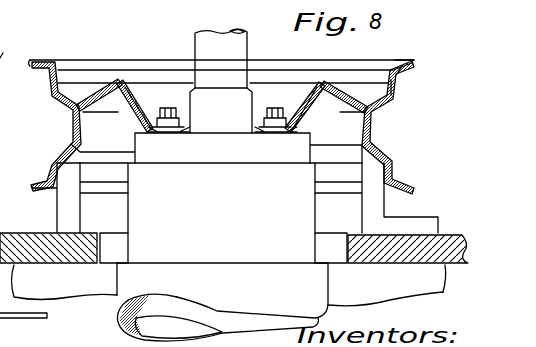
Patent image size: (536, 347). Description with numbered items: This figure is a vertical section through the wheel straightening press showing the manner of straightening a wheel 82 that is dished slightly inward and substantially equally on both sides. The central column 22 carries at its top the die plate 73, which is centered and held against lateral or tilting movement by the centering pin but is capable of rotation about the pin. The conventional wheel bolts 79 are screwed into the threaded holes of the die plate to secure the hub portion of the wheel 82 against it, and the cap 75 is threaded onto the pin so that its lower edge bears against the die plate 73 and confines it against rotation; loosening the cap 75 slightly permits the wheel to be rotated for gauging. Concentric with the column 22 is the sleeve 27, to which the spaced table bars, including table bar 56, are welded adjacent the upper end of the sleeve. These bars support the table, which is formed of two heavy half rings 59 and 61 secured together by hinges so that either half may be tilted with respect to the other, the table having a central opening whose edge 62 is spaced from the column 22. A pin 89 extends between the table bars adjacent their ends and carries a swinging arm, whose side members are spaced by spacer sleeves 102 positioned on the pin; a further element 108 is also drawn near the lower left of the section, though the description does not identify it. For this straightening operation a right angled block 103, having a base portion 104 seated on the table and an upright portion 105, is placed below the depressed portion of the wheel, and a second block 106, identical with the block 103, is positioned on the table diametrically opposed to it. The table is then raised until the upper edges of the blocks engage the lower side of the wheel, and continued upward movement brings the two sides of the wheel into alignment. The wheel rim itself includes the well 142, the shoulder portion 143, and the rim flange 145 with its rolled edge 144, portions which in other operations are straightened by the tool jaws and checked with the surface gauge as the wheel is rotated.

The wheel 82 is at (82, 55).
The rolled edge 144 is at (411, 63).
The rim flange 145 is at (406, 67).
The shoulder portion 143 is at (391, 87).
The well 142 is at (371, 125).
The cap 75 is at (235, 53).
The wheel bolts 79 is at (283, 108).
The die plate 73 is at (217, 148).
The column 22 is at (209, 213).
The second block 106 is at (62, 223).
The upright portion 105 is at (374, 173).
The right angled block 103 is at (371, 212).
The base portion 104 is at (419, 223).
The half ring 61 is at (45, 255).
The table bar 56 is at (65, 282).
The sleeve 27 is at (222, 290).
The edge of the opening 62 is at (335, 265).
The half ring 59 is at (442, 255).
The belt 108 is at (22, 322).
The spacer sleeves 102 is at (23, 307).
The pin 89 is at (9, 48).